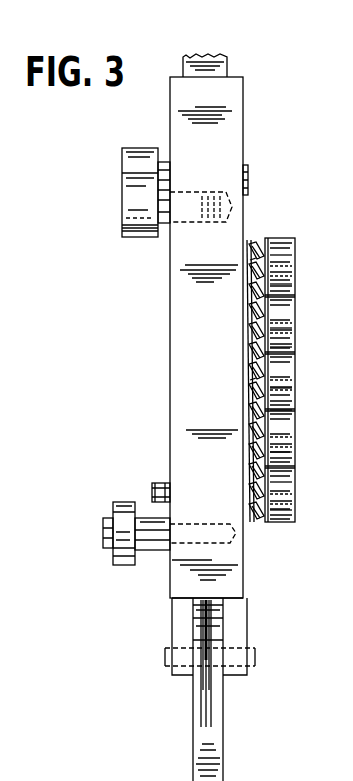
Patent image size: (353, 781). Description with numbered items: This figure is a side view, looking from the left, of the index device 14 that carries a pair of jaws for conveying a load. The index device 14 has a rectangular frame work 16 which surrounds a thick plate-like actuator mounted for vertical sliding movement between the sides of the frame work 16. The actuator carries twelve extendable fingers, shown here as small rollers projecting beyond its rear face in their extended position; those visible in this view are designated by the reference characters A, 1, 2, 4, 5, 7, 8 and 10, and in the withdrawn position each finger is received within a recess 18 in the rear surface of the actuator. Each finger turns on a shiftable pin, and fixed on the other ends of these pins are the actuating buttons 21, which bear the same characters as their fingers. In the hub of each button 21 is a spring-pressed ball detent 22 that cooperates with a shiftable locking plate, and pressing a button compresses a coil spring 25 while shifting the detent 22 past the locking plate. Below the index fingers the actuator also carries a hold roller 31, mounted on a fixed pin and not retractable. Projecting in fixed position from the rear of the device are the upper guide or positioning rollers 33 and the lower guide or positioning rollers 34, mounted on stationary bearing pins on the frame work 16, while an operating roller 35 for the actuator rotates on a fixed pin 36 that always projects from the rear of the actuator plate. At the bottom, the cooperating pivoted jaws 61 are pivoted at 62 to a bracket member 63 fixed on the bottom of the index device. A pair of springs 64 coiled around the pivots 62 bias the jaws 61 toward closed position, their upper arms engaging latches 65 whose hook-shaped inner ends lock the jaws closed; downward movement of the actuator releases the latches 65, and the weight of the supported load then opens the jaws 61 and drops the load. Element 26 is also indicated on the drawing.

The index device 14 is at (246, 130).
The rectangular frame work 16 is at (208, 341).
The operating roller 35 is at (136, 148).
The upper guide or positioning rollers 33 is at (142, 236).
The fixed pin 36 is at (250, 180).
The spring-pressed ball detent 22 is at (256, 240).
The coil spring 25 is at (252, 283).
The actuating buttons 21 is at (290, 310).
The extendable finger 10 is at (282, 264).
The extendable finger 8 is at (286, 296).
The extendable finger 7 is at (286, 336).
The extendable finger 5 is at (286, 356).
The extendable finger 4 is at (286, 391).
The extendable finger 2 is at (286, 412).
The extendable finger 1 is at (286, 454).
The extendable finger A is at (286, 485).
The bottom module 26 is at (290, 512).
The recess 18 is at (350, 466).
The hold roller 31 is at (158, 484).
The lower guide or positioning rollers 34 is at (126, 566).
The bracket member 63 is at (237, 630).
The pivots 62 is at (250, 658).
The pivoted jaws 61 is at (212, 750).
The springs 64 is at (204, 698).
The latches 65 is at (200, 622).